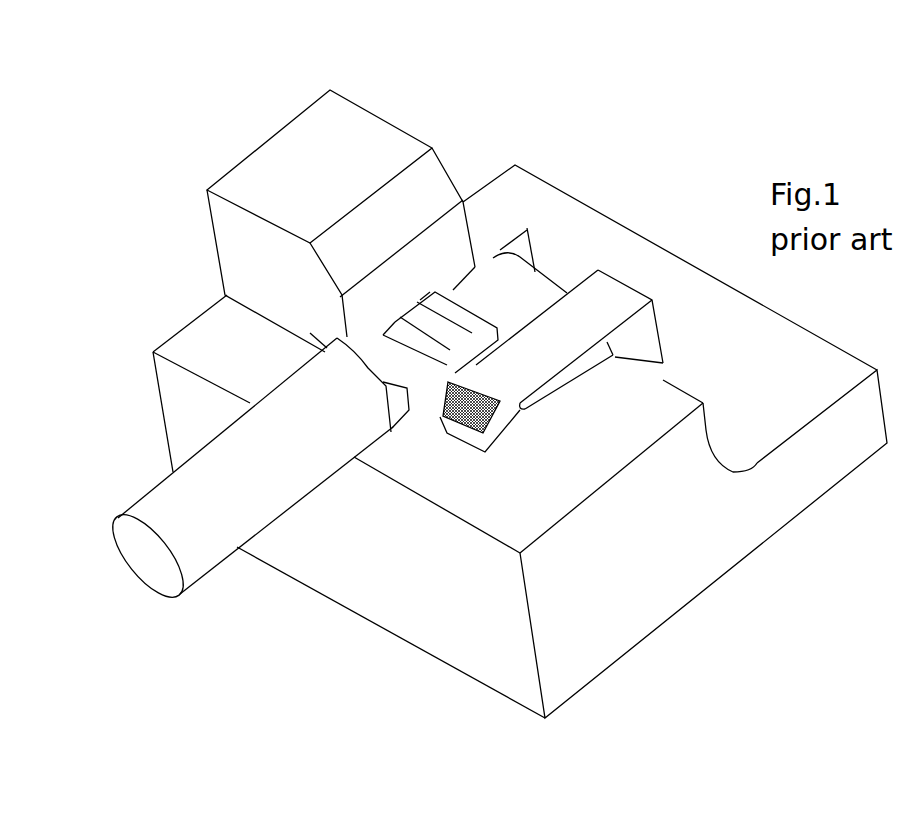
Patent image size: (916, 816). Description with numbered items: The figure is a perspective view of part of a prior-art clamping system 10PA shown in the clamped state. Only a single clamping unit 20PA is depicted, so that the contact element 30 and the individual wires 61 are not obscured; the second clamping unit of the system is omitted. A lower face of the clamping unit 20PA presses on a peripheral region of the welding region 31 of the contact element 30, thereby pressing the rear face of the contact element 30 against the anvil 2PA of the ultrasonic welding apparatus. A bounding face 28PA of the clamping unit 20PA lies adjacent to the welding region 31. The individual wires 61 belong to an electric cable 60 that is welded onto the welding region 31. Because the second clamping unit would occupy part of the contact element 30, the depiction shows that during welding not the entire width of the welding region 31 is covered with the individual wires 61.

The anvil 2PA is at (495, 433).
The clamping system 10PA is at (493, 171).
The clamping unit 20PA is at (316, 190).
The alignment groove 28PA is at (428, 263).
The contact element 30 is at (492, 312).
The welding region 31 is at (448, 385).
The electric cable 60 is at (228, 465).
The individual wires 61 is at (408, 355).